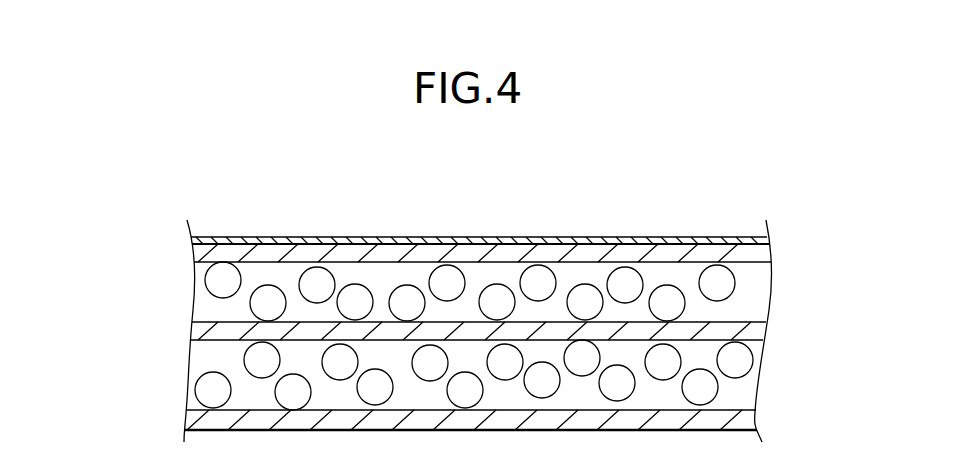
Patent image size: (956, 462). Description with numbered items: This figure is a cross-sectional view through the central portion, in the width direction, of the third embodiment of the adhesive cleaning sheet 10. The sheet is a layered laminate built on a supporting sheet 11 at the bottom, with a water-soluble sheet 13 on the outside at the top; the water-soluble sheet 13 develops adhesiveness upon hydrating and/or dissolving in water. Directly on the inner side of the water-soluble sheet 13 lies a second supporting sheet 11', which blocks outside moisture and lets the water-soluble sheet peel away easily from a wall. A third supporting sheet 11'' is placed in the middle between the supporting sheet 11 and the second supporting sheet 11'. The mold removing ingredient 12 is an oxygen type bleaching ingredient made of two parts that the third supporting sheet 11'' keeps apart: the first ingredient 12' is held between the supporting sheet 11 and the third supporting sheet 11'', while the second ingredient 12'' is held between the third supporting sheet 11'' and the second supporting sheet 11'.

The adhesive cleaning sheet 10 is at (705, 195).
The supporting sheet 11 is at (519, 422).
The second supporting sheet 11' is at (527, 254).
The third supporting sheet 11'' is at (528, 332).
The mold removing ingredient 12 is at (417, 331).
The first ingredient 12' is at (443, 375).
The second ingredient 12'' is at (434, 291).
The water-soluble sheet 13 is at (560, 236).